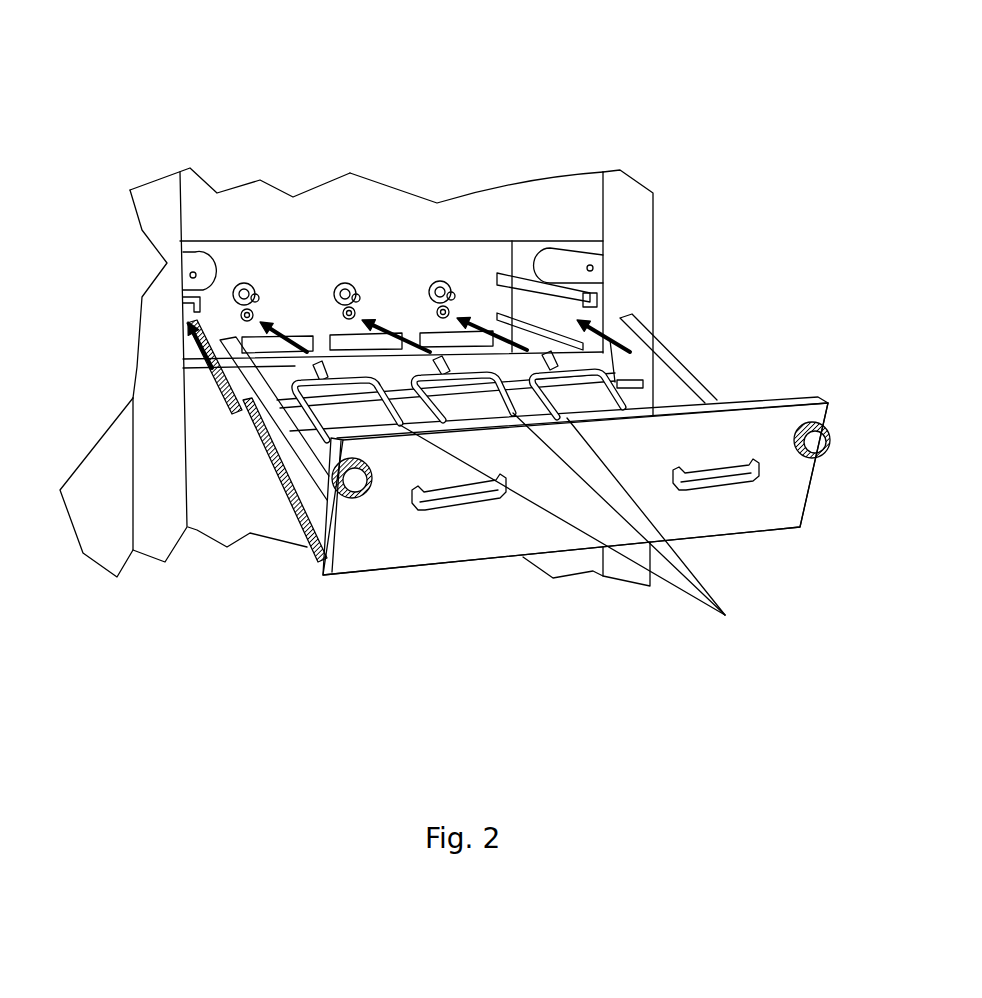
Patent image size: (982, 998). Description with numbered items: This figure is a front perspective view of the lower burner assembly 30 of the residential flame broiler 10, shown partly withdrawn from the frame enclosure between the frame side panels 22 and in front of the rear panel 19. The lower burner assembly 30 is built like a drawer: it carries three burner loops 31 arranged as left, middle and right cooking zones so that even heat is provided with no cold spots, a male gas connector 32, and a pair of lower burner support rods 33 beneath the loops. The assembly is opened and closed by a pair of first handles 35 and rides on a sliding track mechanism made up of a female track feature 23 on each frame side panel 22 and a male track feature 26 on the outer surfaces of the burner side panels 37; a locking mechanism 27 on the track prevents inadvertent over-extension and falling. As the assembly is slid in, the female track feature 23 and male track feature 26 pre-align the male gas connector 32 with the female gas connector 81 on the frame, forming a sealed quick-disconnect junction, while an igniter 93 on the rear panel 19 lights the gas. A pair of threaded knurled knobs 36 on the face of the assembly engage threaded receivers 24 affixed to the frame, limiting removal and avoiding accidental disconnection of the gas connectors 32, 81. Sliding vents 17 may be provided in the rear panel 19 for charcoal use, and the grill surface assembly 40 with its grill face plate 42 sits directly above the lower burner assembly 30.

The residential flame broiler 10 is at (757, 83).
The rear panel 19 is at (405, 263).
The grill surface assembly 40 is at (565, 208).
The frame side panels 22 is at (120, 503).
The threaded receivers 24 is at (190, 272).
The female track feature 23 is at (183, 297).
The igniter 93 is at (242, 283).
The female gas connector 81 is at (252, 309).
The sliding vents 17 is at (297, 335).
The lower burner assembly 30 is at (745, 418).
The grill face plate 42 is at (460, 540).
The male gas connector 32 is at (320, 357).
The burner loops 31 is at (575, 526).
The lower burner support rods 33 is at (643, 383).
The locking mechanism 27 is at (213, 382).
The burner side panels 37 is at (305, 483).
The male track feature 26 is at (305, 517).
The threaded knurled knobs 36 is at (350, 483).
The first handles 35 is at (460, 508).